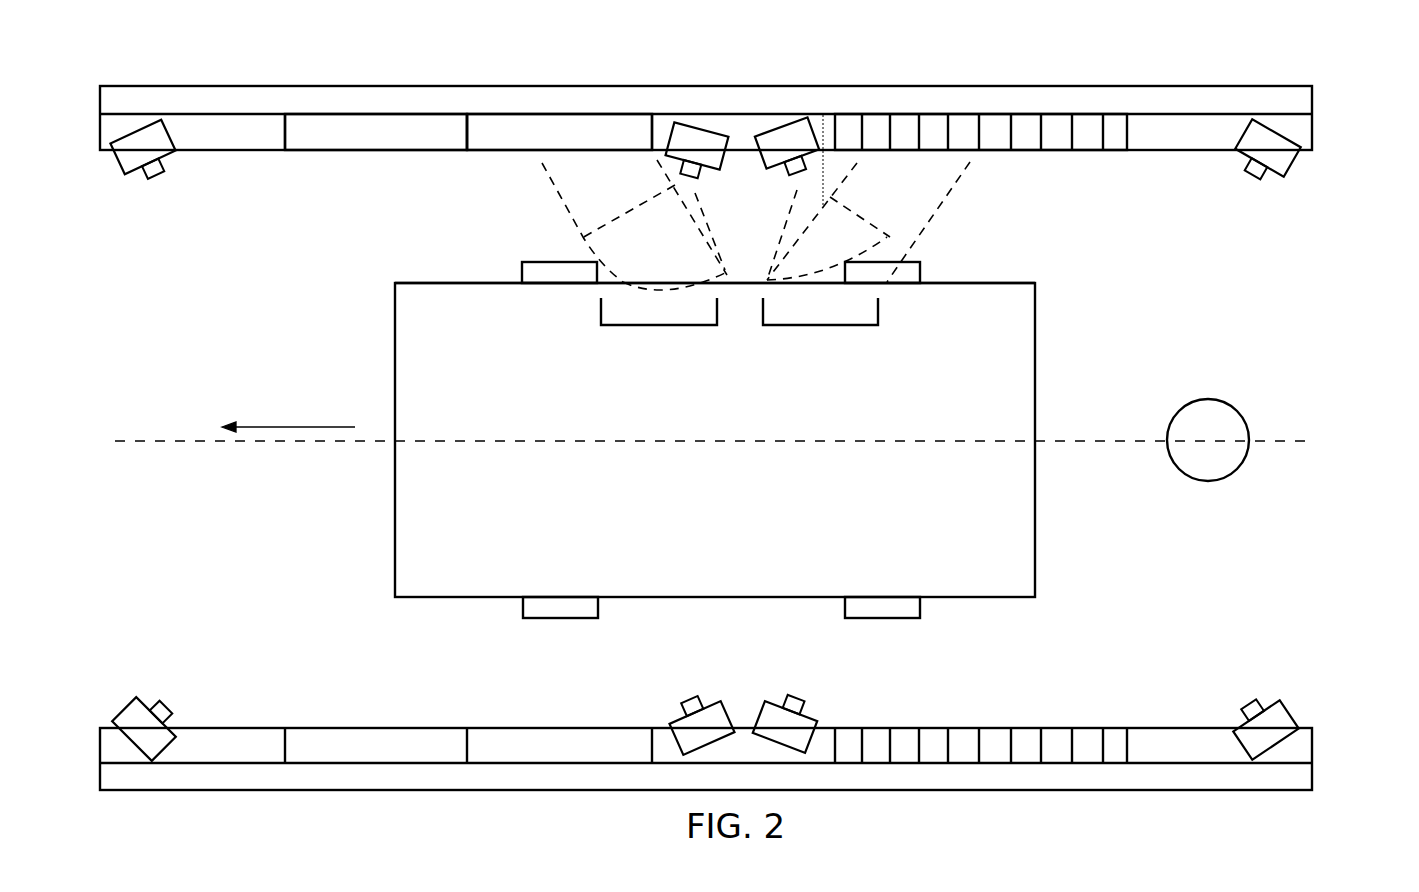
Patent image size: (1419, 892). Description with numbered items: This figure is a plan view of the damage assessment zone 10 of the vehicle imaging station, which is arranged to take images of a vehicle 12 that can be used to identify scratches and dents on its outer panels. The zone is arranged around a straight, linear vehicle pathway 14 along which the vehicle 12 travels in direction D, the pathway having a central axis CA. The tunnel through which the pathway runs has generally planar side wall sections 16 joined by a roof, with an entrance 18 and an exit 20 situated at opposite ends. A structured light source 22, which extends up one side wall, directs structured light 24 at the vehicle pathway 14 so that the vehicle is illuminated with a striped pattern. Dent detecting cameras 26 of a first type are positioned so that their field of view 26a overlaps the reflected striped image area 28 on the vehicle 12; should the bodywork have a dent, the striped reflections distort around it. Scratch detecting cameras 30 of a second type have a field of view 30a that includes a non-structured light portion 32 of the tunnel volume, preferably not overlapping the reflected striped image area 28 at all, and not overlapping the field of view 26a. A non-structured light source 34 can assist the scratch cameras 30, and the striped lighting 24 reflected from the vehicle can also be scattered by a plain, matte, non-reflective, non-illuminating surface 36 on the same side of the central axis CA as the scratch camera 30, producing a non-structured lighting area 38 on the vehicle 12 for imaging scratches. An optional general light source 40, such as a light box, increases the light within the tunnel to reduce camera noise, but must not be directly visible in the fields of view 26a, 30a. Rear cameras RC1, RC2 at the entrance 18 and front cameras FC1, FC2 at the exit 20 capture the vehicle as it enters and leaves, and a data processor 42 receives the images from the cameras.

The damage assessment zone 10 is at (1330, 84).
The vehicle 12 is at (722, 512).
The vehicle pathway 14 is at (1102, 359).
The side wall section 16 is at (1313, 777).
The entrance 18 is at (1261, 315).
The exit 20 is at (105, 348).
The structured light source 22 is at (1087, 133).
The structured light 24 is at (922, 180).
The dent detecting camera 26 is at (795, 115).
The field of view of dent detecting camera 26a is at (826, 140).
The reflected striped image area 28 is at (820, 326).
The scratch detecting camera 30 is at (705, 130).
The field of view of scratch detecting camera 30a is at (693, 212).
The non-structured light portion 32 is at (583, 168).
The non-structured light source 34 is at (500, 130).
The non-reflective, non-illuminating surface 36 is at (624, 150).
The non-structured lighting area 38 is at (667, 326).
The general light source 40 is at (383, 130).
The data processor 42 is at (1220, 450).
The front camera FC1 is at (172, 157).
The rear camera RC1 is at (1297, 160).
The front camera FC2 is at (128, 705).
The rear camera RC2 is at (1283, 716).
The direction of travel D is at (285, 413).
The central axis CA is at (731, 442).